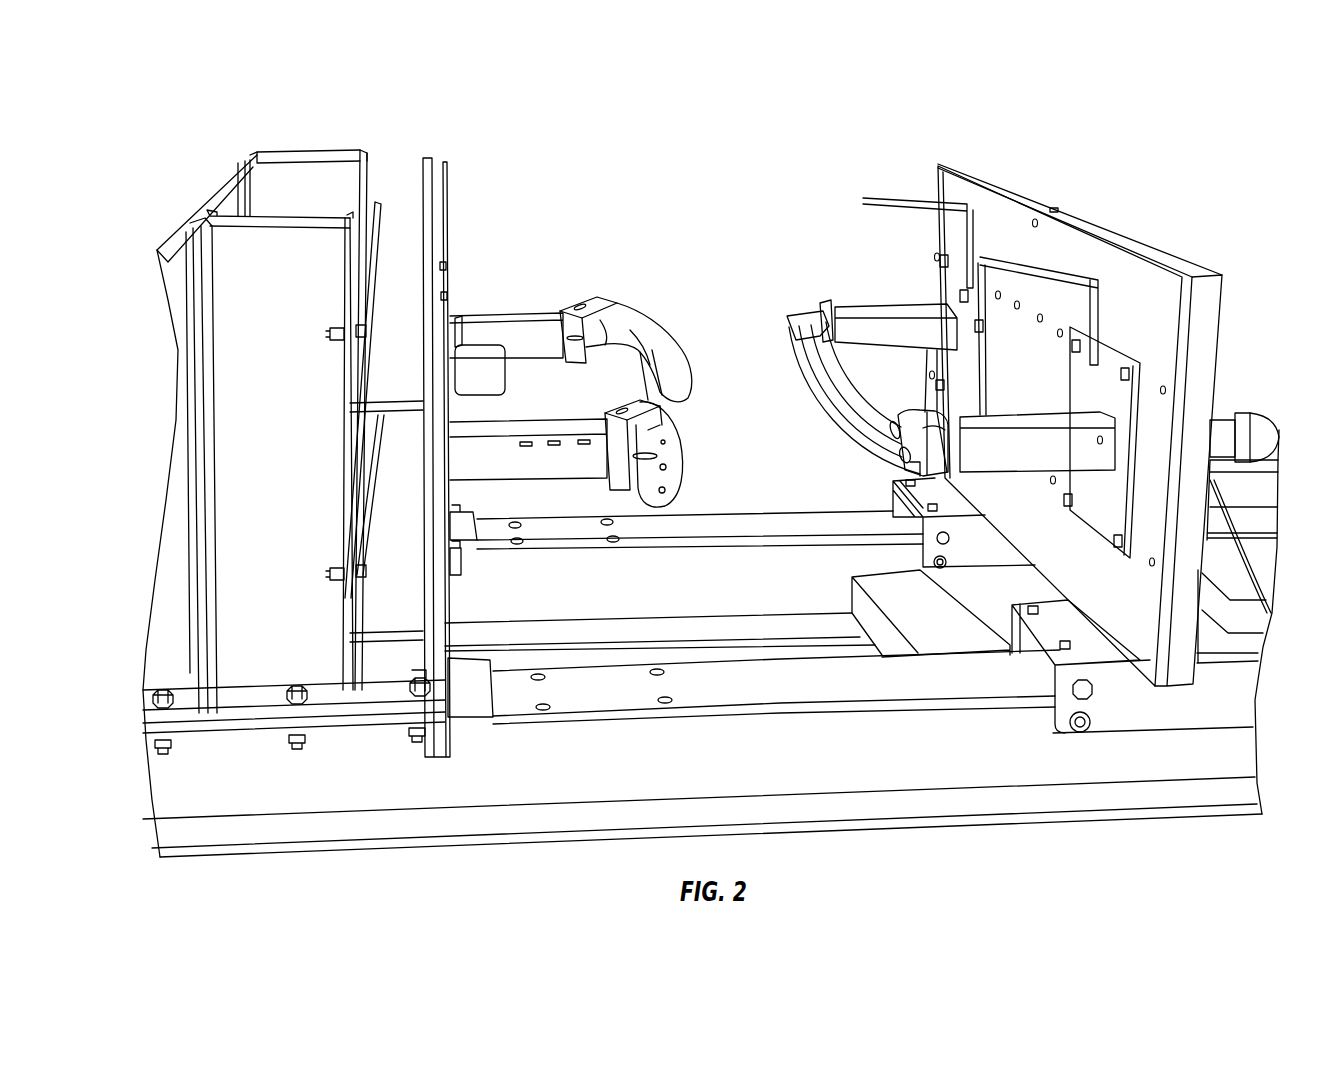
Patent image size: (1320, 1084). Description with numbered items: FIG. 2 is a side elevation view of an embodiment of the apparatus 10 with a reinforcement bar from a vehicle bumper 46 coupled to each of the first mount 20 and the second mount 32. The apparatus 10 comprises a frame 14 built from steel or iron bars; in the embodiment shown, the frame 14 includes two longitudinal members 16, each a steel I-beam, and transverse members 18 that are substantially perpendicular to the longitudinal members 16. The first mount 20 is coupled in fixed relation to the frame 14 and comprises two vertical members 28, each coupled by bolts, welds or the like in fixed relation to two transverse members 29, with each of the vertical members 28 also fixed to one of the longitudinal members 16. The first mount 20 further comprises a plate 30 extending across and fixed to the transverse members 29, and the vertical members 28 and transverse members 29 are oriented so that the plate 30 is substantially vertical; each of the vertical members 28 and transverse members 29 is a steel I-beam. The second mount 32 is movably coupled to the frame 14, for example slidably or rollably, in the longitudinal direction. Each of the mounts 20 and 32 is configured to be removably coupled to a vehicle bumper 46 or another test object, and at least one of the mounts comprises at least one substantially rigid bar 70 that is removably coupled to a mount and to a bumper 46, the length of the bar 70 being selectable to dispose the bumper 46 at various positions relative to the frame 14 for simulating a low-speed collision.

The apparatus 10 is at (1068, 110).
The frame 14 is at (174, 193).
The longitudinal members 16 is at (975, 766).
The transverse members 18 is at (918, 612).
The first mount 20 is at (417, 156).
The vertical members 28 is at (287, 167).
The transverse members 29 is at (407, 233).
The plate 30 is at (431, 176).
The second mount 32 is at (937, 157).
The vehicle bumper 46 is at (588, 302).
The bar 70 is at (498, 314).